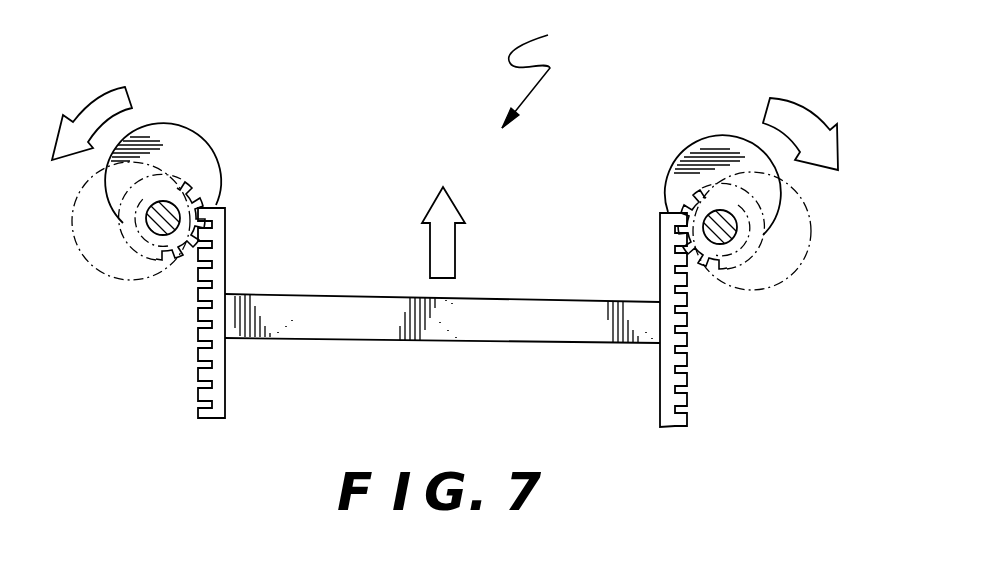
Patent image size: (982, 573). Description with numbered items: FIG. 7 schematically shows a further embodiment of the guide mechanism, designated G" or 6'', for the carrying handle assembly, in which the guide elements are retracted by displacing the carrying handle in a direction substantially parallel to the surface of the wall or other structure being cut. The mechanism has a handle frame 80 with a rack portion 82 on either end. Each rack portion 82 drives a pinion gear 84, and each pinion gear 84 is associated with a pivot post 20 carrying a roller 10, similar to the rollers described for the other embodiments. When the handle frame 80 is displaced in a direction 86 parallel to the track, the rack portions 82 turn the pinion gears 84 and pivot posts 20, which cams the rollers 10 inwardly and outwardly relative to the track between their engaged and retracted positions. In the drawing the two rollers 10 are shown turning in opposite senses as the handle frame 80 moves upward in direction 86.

The roller 10 is at (182, 130).
The pivot post 20 is at (166, 209).
The pinion gear 84 is at (197, 204).
The rack portion 82 is at (200, 329).
The handle frame 80 is at (295, 300).
The direction 86 is at (456, 257).
The guide mechanism 6'' is at (559, 67).